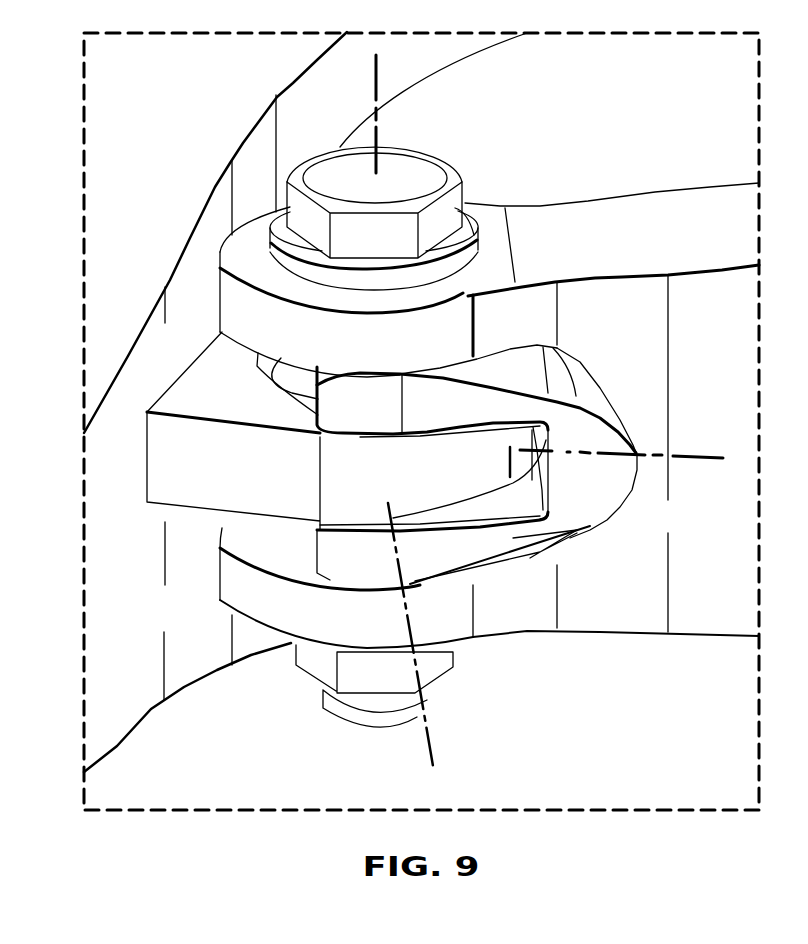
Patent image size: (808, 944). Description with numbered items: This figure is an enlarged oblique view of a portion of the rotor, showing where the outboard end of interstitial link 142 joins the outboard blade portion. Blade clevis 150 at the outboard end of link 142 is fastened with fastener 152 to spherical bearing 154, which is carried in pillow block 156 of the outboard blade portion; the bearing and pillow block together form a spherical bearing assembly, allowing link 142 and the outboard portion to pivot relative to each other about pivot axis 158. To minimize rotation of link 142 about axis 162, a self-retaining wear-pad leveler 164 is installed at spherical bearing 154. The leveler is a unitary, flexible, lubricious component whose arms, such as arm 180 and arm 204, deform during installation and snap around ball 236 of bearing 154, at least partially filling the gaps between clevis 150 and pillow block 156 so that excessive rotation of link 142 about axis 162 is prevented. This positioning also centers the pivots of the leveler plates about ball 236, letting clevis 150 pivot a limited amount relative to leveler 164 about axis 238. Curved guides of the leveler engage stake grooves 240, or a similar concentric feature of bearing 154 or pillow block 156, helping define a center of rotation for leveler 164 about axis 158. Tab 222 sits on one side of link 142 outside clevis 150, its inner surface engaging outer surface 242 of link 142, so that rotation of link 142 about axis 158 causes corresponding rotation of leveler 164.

The interstitial link 142 is at (650, 188).
The outer surface 242 is at (620, 298).
The fastener 152 is at (332, 160).
The pivot axis 158 is at (378, 66).
The spherical bearing 154 is at (252, 368).
The ball 236 is at (295, 377).
The stake grooves 240 is at (285, 400).
The pillow block 156 is at (178, 497).
The arm 180 is at (372, 417).
The axis 162 is at (707, 457).
The self-retaining wear-pad leveler 164 is at (648, 500).
The tab 222 is at (607, 505).
The arm 204 is at (480, 548).
The blade clevis 150 is at (228, 592).
The axis 238 is at (443, 644).